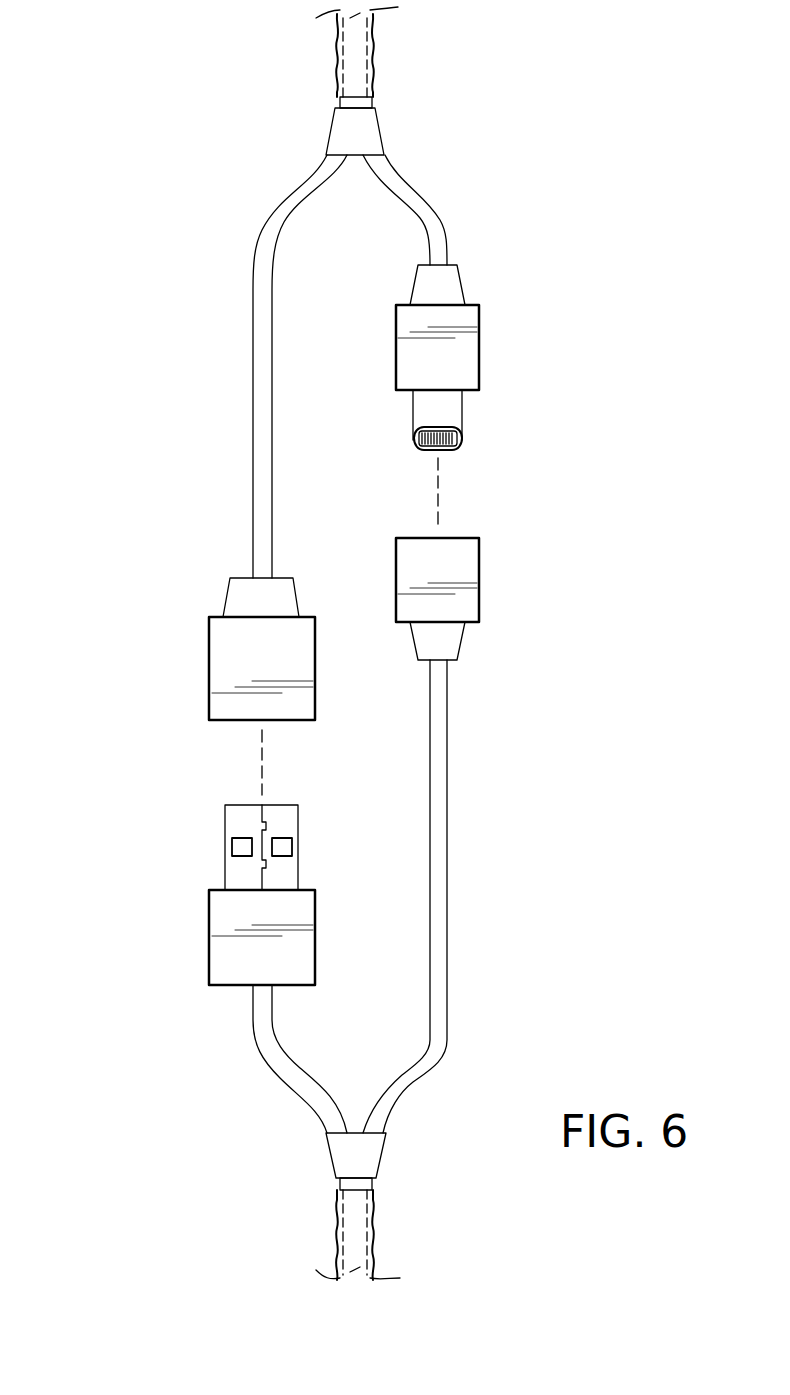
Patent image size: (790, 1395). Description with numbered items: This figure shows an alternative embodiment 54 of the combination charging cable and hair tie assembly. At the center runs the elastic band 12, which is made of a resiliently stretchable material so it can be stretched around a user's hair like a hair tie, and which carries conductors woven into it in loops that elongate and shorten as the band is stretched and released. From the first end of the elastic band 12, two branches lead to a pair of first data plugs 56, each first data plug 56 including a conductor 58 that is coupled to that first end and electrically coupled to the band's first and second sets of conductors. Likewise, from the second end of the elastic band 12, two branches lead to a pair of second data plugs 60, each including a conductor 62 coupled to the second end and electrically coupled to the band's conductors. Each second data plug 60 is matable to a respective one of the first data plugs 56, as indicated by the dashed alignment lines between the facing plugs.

The elastic band 12 is at (357, 45).
The alternative embodiment 54 is at (178, 378).
The first data plug 56 is at (209, 668).
The conductor 58 is at (252, 420).
The second data plug 60 is at (209, 925).
The conductor 62 is at (271, 1075).